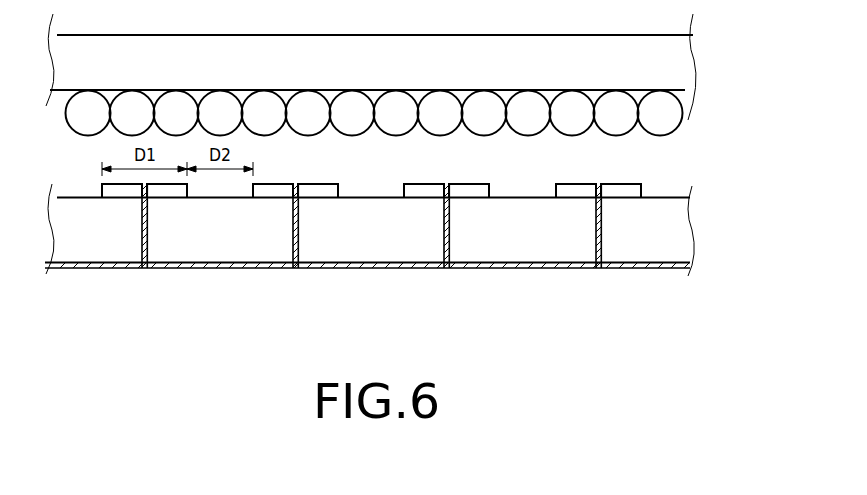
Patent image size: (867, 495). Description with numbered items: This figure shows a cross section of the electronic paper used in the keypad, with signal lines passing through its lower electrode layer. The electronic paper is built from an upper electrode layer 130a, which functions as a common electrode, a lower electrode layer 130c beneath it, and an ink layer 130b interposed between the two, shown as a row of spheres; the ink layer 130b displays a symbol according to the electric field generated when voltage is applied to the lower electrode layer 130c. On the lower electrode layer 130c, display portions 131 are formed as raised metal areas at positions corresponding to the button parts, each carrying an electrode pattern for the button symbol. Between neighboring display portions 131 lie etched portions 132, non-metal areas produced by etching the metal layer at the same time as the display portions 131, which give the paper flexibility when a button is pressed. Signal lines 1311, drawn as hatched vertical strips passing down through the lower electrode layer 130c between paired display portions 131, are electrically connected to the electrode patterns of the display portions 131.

The upper electrode layer 130a is at (680, 52).
The ink layer 130b is at (668, 112).
The lower electrode layer 130c is at (667, 237).
The display portions 131 is at (620, 192).
The signal lines 1311 is at (600, 268).
The etched portions 132 is at (662, 197).